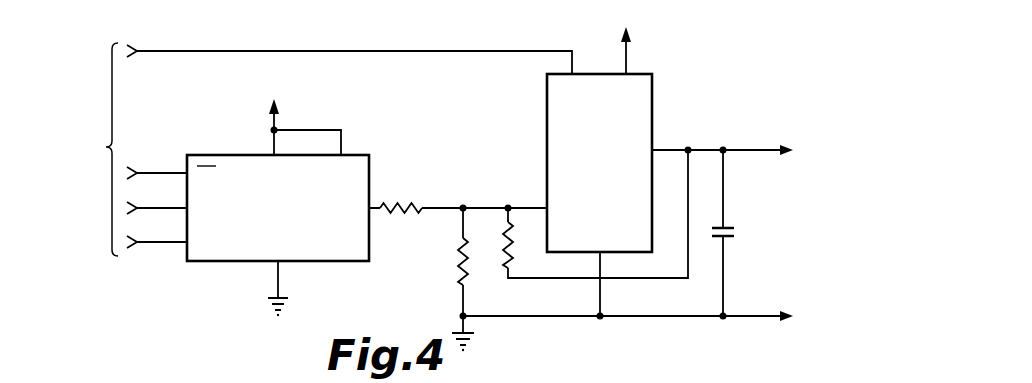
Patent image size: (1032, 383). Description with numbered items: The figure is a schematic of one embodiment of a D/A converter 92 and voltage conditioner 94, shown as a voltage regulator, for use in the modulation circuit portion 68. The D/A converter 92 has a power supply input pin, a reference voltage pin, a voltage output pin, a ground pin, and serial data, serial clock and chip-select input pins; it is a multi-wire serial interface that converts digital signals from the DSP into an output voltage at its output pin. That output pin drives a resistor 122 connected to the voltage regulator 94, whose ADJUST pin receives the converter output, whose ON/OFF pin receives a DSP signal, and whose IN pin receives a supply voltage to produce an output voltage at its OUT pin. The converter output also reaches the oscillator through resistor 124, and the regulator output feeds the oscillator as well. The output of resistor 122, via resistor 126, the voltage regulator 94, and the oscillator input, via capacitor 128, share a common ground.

The modulation circuit portion 68 is at (738, 40).
The D/A converter 92 is at (220, 155).
The voltage conditioner 94 is at (652, 88).
The resistor 122 is at (398, 201).
The resistor 124 is at (503, 235).
The resistor 126 is at (458, 266).
The capacitor 128 is at (737, 232).